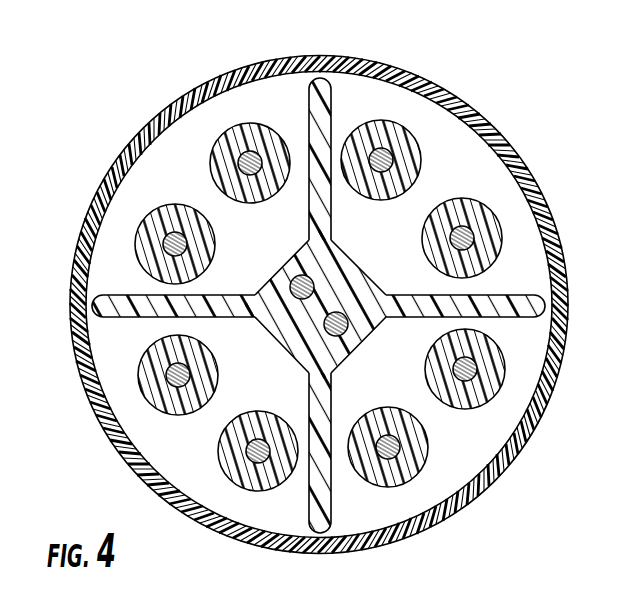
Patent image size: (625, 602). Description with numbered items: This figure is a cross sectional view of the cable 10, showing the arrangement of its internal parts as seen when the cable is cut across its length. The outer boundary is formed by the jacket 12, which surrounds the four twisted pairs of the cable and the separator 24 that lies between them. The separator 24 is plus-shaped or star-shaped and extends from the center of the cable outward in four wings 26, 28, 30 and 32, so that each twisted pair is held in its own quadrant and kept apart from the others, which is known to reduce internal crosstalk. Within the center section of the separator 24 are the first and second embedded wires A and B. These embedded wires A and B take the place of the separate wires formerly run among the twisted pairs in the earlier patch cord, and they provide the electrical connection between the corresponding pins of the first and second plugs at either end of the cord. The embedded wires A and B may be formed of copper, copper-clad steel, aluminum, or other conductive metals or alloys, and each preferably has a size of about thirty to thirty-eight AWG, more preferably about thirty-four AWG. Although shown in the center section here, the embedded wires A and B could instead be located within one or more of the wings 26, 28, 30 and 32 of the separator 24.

The cable 10 is at (78, 122).
The jacket 12 is at (82, 243).
The separator 24 is at (335, 275).
The wing 26 is at (330, 105).
The wing 28 is at (107, 299).
The wing 30 is at (330, 492).
The wing 32 is at (525, 312).
The first embedded wire A is at (297, 277).
The second embedded wire B is at (340, 335).